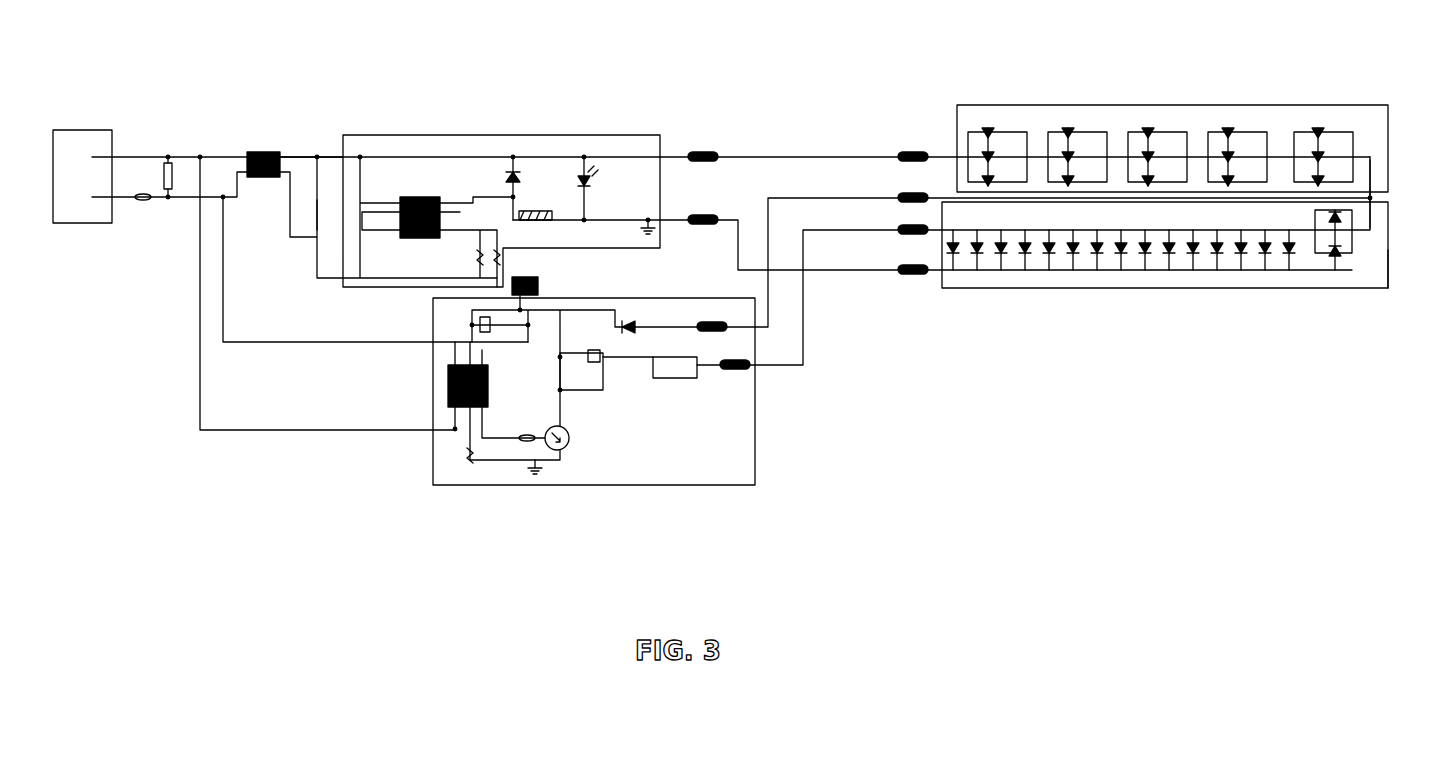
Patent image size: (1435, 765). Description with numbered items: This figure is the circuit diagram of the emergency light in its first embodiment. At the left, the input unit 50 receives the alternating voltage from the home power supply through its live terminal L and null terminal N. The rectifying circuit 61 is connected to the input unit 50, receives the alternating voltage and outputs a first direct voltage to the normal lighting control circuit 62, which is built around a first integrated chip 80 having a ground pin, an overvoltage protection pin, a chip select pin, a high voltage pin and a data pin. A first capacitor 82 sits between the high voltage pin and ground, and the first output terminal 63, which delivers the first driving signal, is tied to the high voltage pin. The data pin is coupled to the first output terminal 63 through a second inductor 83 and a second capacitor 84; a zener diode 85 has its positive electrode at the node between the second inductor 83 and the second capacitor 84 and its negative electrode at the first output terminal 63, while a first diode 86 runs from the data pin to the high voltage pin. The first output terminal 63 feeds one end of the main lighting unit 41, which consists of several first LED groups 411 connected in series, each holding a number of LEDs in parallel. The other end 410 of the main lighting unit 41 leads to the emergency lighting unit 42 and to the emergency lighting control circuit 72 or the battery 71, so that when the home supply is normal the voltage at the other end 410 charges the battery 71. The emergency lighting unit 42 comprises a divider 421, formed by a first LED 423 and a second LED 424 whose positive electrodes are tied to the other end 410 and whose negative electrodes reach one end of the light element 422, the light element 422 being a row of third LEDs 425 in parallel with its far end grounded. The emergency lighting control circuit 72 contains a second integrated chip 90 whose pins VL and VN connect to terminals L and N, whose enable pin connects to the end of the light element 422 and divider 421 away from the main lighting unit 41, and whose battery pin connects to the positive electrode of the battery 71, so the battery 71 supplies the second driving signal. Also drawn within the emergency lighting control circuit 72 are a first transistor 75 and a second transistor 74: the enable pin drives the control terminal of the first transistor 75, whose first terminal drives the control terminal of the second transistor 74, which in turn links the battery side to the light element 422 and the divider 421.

The input unit 50 is at (113, 130).
The rectifying circuit 61 is at (265, 150).
The normal lighting control circuit 62 is at (455, 135).
The first output terminal 63 is at (710, 150).
The battery 71 is at (540, 287).
The emergency lighting control circuit 72 is at (760, 452).
The second transistor 74 is at (603, 385).
The first transistor 75 is at (565, 452).
The first integrated chip 80 is at (420, 195).
The first capacitor 82 is at (315, 228).
The second inductor 83 is at (545, 208).
The second capacitor 84 is at (595, 175).
The zener diode 85 is at (520, 170).
The first diode 86 is at (637, 316).
The second integrated chip 90 is at (445, 392).
The main lighting unit 41 is at (1130, 105).
The first LED group 411 is at (1000, 128).
The other end of the main lighting unit 410 is at (1372, 196).
The emergency lighting unit 42 is at (1030, 290).
The divider 421 is at (1318, 255).
The light element 422 is at (1180, 270).
The first LED 423 is at (1388, 290).
The second LED 424 is at (1336, 260).
The third LED 425 is at (942, 258).